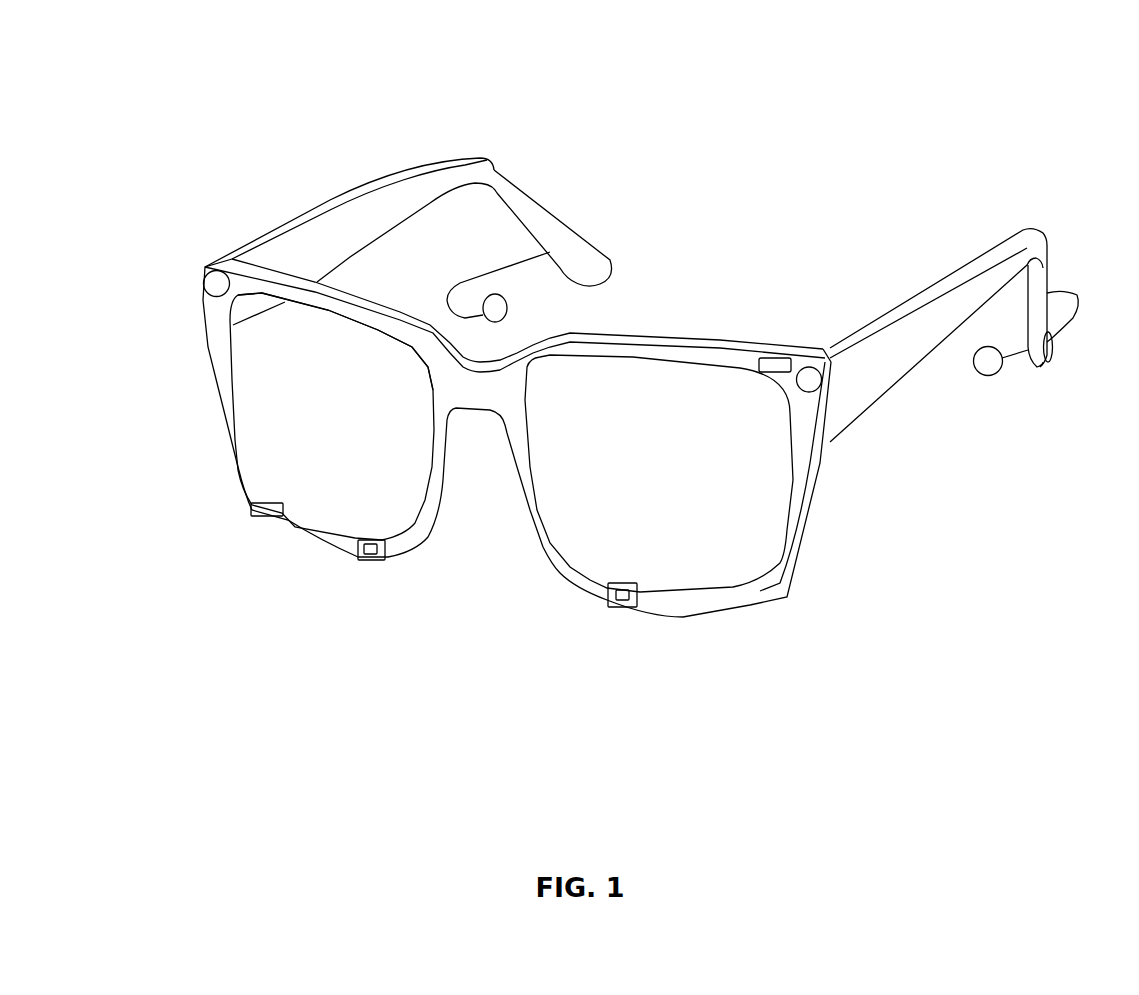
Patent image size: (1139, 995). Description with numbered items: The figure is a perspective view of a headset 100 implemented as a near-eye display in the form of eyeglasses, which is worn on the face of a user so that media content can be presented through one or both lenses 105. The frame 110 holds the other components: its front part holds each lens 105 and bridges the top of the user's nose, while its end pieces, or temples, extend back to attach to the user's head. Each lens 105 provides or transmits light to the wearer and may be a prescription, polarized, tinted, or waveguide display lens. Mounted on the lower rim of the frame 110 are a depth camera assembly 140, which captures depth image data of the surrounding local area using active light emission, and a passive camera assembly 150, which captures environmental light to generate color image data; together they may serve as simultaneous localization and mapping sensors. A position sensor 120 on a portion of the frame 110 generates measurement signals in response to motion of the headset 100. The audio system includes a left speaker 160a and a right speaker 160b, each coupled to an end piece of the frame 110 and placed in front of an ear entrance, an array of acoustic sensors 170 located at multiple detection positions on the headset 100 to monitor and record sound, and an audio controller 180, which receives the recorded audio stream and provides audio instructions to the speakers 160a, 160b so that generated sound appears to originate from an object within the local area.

The headset 100 is at (115, 94).
The lens 105 is at (265, 395).
The frame 110 is at (495, 160).
The position sensor 120 is at (252, 508).
The depth camera assembly (DCA) 140 is at (358, 556).
The passive camera assembly (PCA) 150 is at (618, 603).
The left speaker 160a is at (987, 368).
The right speaker 160b is at (507, 310).
The acoustic sensor 170 is at (868, 586).
The audio controller 180 is at (777, 358).